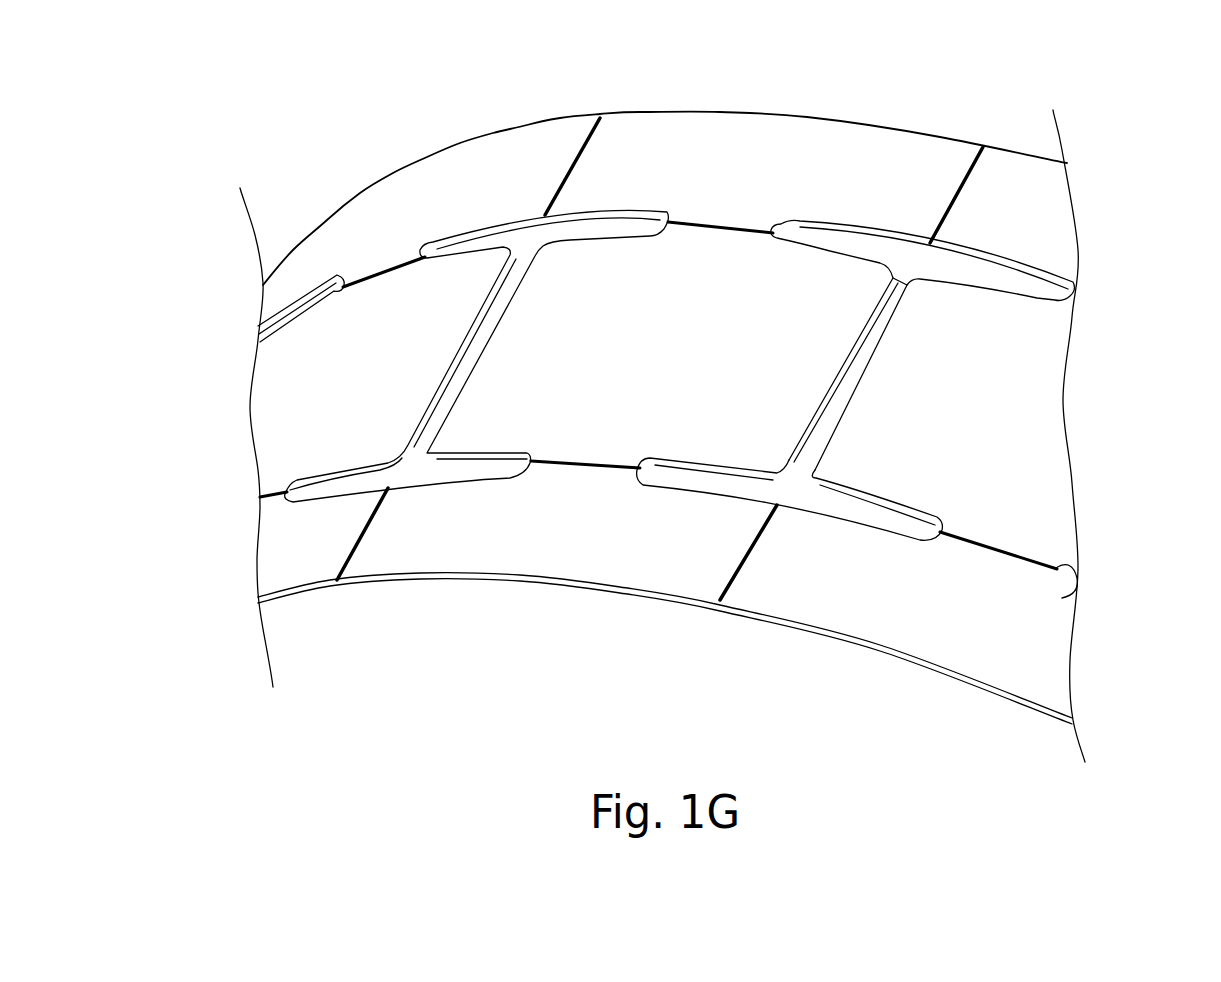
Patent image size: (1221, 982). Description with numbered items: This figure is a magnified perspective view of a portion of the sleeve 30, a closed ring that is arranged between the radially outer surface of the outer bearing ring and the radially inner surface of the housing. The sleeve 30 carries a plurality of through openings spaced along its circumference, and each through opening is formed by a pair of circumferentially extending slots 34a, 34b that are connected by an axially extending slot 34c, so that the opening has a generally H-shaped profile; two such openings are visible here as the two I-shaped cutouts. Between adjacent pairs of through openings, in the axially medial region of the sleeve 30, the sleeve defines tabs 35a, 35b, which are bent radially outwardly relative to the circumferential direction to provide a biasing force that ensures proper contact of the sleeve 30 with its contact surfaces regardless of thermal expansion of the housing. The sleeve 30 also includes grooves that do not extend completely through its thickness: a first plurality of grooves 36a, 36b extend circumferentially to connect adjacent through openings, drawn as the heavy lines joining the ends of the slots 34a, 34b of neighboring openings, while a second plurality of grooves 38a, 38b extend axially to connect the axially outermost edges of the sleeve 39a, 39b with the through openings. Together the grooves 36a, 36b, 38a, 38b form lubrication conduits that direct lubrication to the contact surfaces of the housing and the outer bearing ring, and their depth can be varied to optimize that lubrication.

The sleeve 30 is at (493, 578).
The circumferentially extending slot 34a is at (880, 517).
The circumferentially extending slot 34b is at (1023, 265).
The axially extending slot 34c is at (870, 343).
The tab 35a is at (543, 312).
The tab 35b is at (370, 370).
The circumferentially extending groove 36a is at (560, 467).
The circumferentially extending groove 36b is at (712, 217).
The axially extending groove 38a is at (350, 553).
The axially extending groove 38b is at (571, 168).
The axially outermost edge of the sleeve 39a is at (628, 598).
The axially outermost edge of the sleeve 39b is at (837, 125).